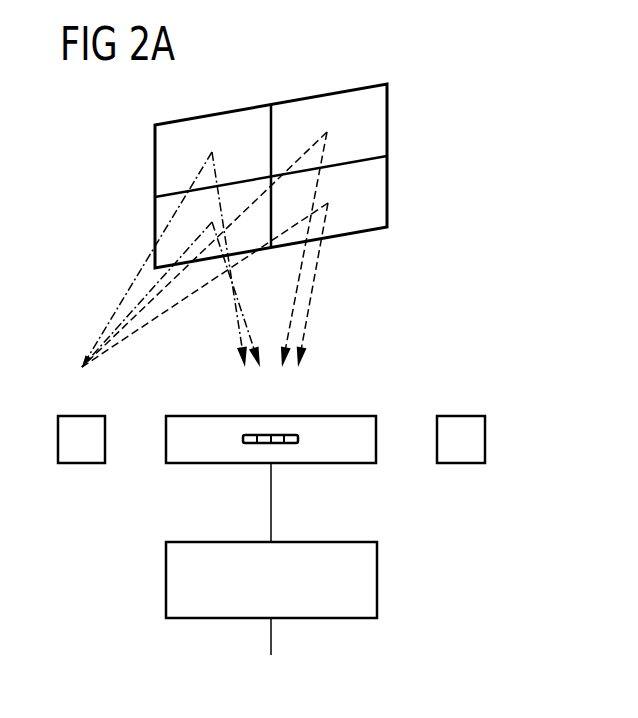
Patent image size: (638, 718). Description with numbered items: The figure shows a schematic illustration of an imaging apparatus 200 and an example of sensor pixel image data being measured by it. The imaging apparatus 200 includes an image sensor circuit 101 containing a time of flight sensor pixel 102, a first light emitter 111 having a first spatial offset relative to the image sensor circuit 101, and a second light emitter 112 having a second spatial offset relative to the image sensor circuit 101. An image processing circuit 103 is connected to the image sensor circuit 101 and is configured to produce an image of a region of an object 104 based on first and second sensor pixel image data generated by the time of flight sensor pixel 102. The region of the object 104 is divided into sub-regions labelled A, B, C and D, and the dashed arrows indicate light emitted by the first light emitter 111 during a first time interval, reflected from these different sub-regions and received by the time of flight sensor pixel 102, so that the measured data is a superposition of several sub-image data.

The object 104 is at (155, 158).
The imaging apparatus 200 is at (427, 314).
The image sensor circuit 101 is at (328, 463).
The time of flight sensor pixel 102 is at (299, 439).
The image processing circuit 103 is at (292, 593).
The first light emitter 111 is at (82, 463).
The second light emitter 112 is at (463, 463).